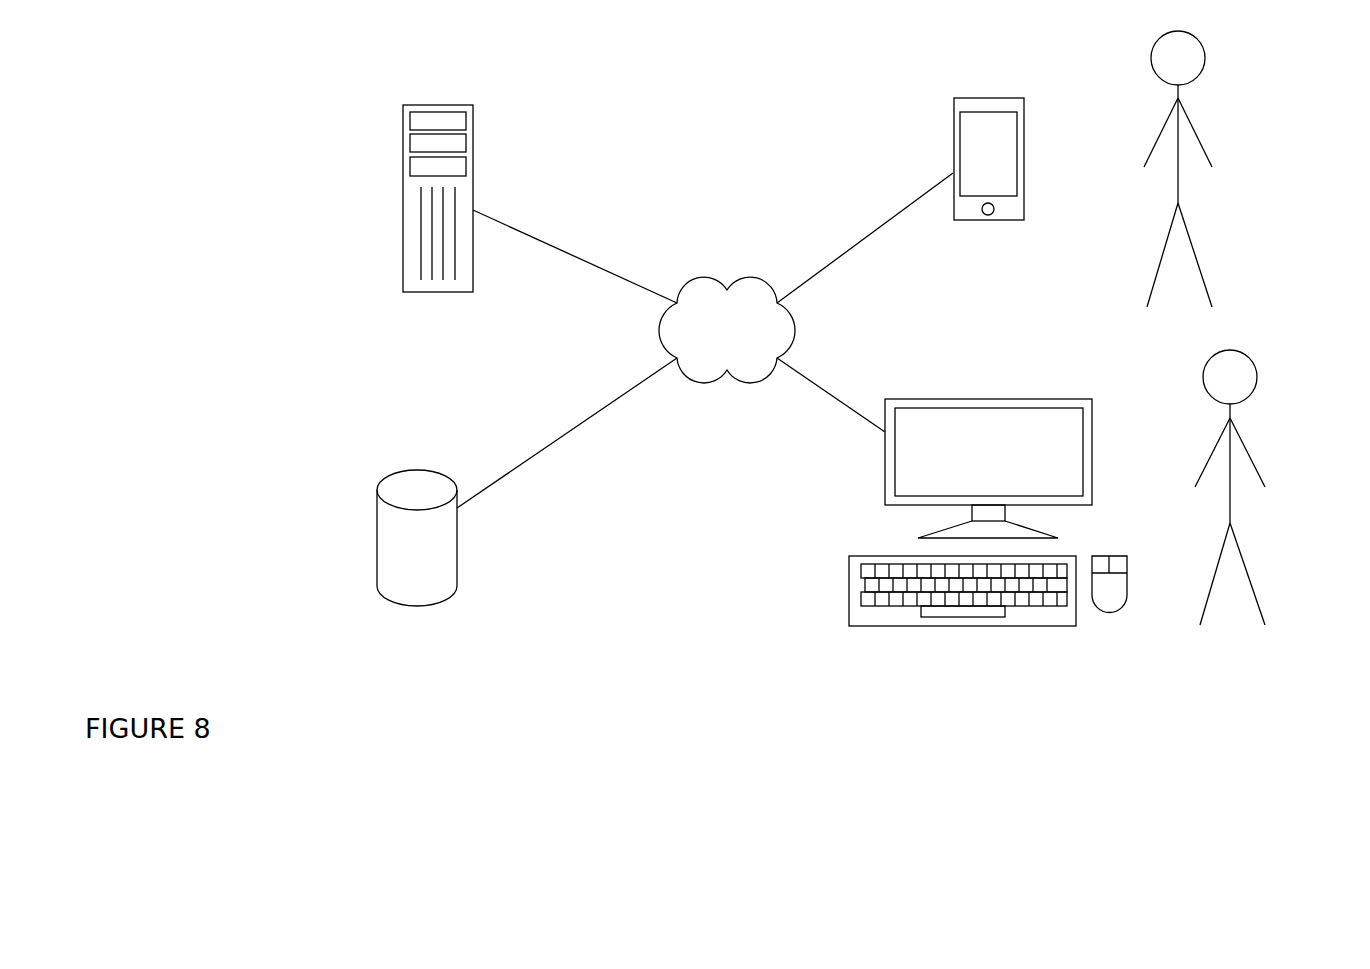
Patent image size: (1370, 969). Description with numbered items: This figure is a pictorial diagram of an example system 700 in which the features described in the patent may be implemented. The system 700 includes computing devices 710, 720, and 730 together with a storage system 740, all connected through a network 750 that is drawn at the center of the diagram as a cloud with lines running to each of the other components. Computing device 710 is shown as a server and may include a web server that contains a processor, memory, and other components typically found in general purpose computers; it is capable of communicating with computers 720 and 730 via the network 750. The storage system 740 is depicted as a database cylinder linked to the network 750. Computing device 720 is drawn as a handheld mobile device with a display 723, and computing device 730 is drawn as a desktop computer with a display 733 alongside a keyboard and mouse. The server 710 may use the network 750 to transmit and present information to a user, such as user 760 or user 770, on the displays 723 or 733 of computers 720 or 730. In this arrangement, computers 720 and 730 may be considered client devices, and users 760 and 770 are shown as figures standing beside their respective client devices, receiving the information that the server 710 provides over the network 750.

The system 700 is at (161, 677).
The computing device 710 is at (473, 152).
The computing device 720 is at (992, 158).
The display 723 is at (958, 160).
The computing device 730 is at (994, 512).
The display 733 is at (885, 470).
The storage system 740 is at (458, 558).
The network 750 is at (727, 330).
The user 760 is at (1192, 128).
The user 770 is at (1248, 455).